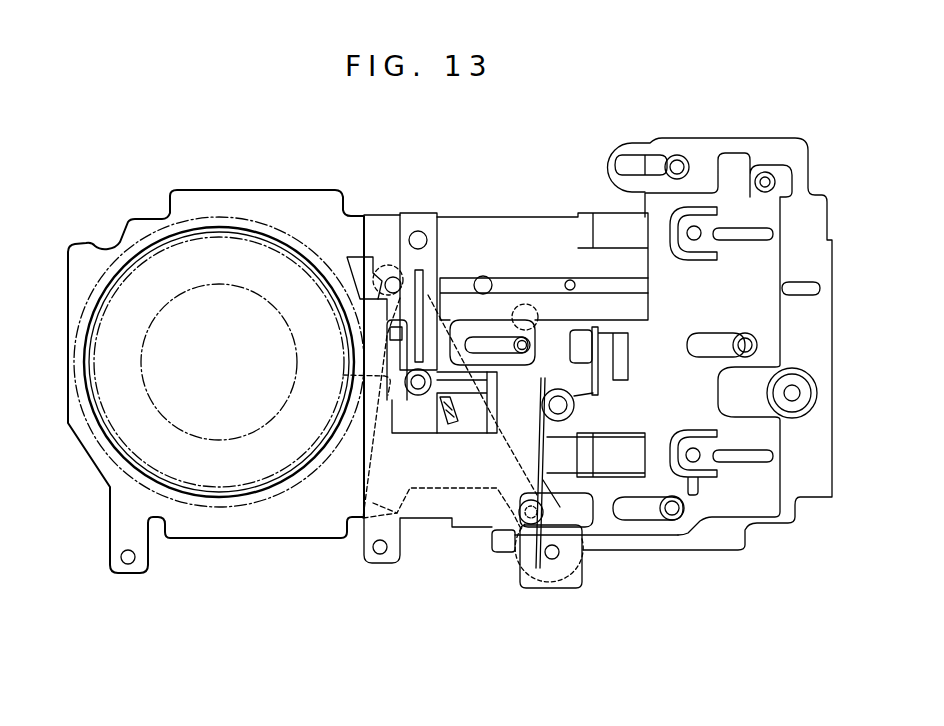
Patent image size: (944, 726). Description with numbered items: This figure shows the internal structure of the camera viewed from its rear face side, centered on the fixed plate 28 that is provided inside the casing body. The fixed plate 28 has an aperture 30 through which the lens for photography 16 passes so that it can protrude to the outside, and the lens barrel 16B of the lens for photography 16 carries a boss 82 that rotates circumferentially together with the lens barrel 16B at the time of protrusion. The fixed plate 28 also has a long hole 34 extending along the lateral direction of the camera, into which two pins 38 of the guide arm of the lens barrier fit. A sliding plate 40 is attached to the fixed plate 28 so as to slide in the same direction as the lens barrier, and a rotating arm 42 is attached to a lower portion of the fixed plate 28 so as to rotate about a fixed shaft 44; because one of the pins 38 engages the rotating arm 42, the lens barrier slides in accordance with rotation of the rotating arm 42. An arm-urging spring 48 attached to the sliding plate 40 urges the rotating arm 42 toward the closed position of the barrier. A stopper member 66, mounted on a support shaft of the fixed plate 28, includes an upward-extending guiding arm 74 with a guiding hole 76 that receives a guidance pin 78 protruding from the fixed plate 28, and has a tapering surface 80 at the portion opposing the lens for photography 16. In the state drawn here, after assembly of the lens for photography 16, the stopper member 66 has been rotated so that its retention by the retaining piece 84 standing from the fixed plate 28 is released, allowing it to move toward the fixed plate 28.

The lens for photography 16 is at (233, 218).
The lens barrel 16B is at (291, 494).
The fixed plate 28 is at (832, 367).
The aperture 30 is at (96, 381).
The long hole 34 is at (568, 280).
The pins 38 is at (370, 250).
The sliding plate 40 is at (784, 319).
The rotating arm 42 is at (440, 490).
The fixed shaft 44 is at (560, 556).
The arm-urging spring 48 is at (520, 565).
The stopper member 66 is at (383, 262).
The guiding arm 74 is at (418, 211).
The guiding hole 76 is at (440, 234).
The guidance pin 78 is at (417, 233).
The tapering surface 80 is at (343, 375).
The boss 82 is at (386, 326).
The retaining piece 84 is at (460, 407).